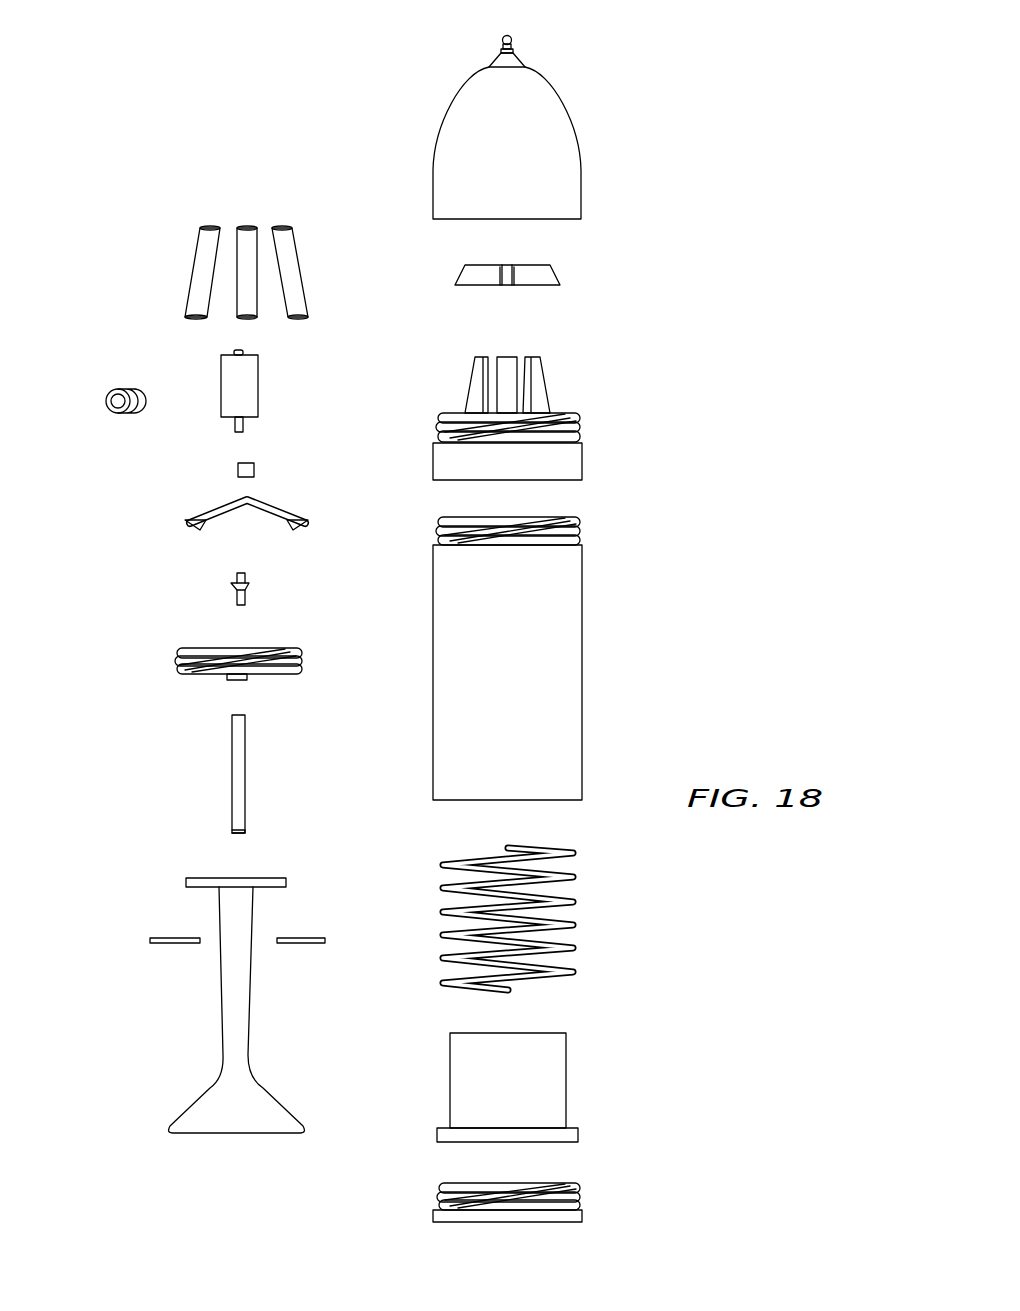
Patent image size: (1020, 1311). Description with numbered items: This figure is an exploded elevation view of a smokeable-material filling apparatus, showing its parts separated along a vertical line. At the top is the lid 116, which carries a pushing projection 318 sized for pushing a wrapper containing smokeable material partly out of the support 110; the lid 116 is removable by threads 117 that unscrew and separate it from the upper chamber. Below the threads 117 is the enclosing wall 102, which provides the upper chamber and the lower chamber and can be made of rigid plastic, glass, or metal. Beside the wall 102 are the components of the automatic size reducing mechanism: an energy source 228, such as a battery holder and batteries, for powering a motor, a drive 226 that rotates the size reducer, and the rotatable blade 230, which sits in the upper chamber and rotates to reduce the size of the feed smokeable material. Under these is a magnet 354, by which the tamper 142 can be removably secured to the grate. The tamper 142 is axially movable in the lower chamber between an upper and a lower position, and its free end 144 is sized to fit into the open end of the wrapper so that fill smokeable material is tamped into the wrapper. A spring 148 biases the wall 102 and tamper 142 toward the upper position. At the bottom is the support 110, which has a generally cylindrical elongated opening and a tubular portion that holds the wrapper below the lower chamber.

The pushing projection 318 is at (511, 38).
The lid 116 is at (568, 165).
The threads 117 is at (580, 430).
The wall 102 is at (582, 668).
The spring 148 is at (578, 900).
The energy source 228 is at (236, 258).
The drive 226 is at (258, 388).
The rotatable blade 230 is at (224, 517).
The magnet 354 is at (232, 678).
The tamper 142 is at (232, 775).
The free end 144 is at (232, 833).
The support 110 is at (222, 995).